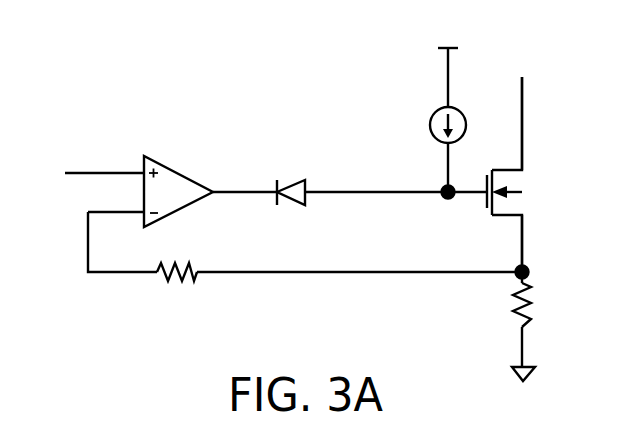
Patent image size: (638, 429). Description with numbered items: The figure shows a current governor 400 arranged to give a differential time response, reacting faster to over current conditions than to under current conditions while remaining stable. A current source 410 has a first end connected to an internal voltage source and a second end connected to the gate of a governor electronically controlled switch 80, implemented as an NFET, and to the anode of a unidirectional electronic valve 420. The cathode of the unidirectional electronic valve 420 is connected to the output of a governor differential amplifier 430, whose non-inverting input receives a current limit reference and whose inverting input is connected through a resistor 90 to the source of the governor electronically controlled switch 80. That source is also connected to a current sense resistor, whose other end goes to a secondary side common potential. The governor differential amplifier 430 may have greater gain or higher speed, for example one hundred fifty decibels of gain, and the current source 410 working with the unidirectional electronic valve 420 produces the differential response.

The current governor 400 is at (112, 62).
The governor differential amplifier 430 is at (189, 174).
The unidirectional electronic valve 420 is at (291, 178).
The current source 410 is at (429, 127).
The governor electronically controlled switch 80 is at (517, 186).
The resistor 90 is at (172, 281).